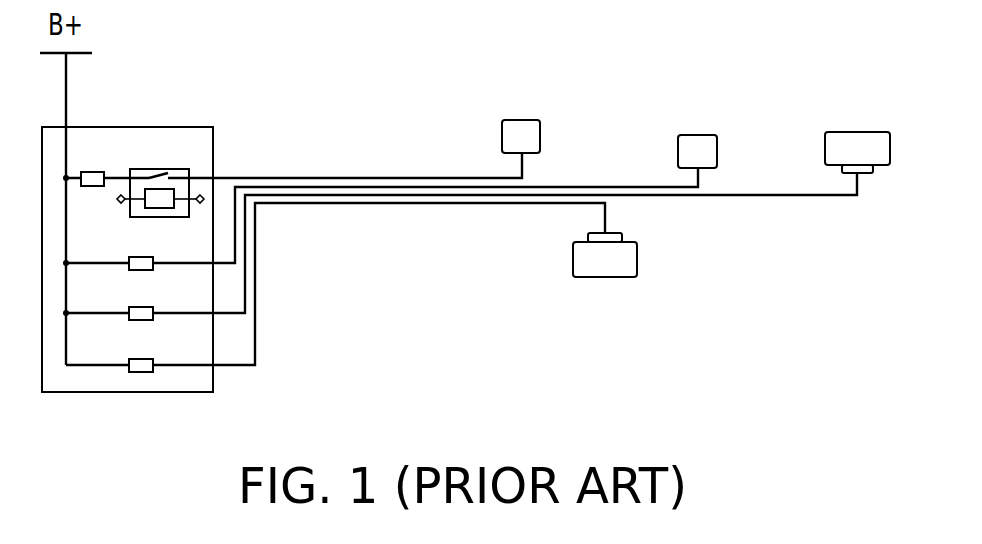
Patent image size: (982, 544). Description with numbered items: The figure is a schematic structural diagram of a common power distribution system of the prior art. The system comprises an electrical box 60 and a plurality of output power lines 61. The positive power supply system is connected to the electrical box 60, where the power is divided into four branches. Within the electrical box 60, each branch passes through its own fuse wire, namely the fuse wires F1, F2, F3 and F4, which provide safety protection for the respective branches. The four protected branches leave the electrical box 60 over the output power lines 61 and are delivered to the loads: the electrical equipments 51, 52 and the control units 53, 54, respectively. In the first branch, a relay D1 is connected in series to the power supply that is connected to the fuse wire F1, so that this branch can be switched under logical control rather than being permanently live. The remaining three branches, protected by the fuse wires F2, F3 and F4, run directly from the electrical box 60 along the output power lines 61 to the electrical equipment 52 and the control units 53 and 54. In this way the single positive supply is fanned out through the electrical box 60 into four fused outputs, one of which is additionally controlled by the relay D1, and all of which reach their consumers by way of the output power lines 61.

The electrical equipment 51 is at (523, 128).
The electrical equipment 52 is at (702, 140).
The control unit 53 is at (852, 147).
The control unit 54 is at (602, 258).
The electrical box 60 is at (108, 137).
The output power lines 61 is at (368, 208).
The fuse wire F1 is at (95, 164).
The fuse wire F2 is at (121, 249).
The fuse wire F3 is at (121, 301).
The fuse wire F4 is at (121, 352).
The relay D1 is at (160, 178).